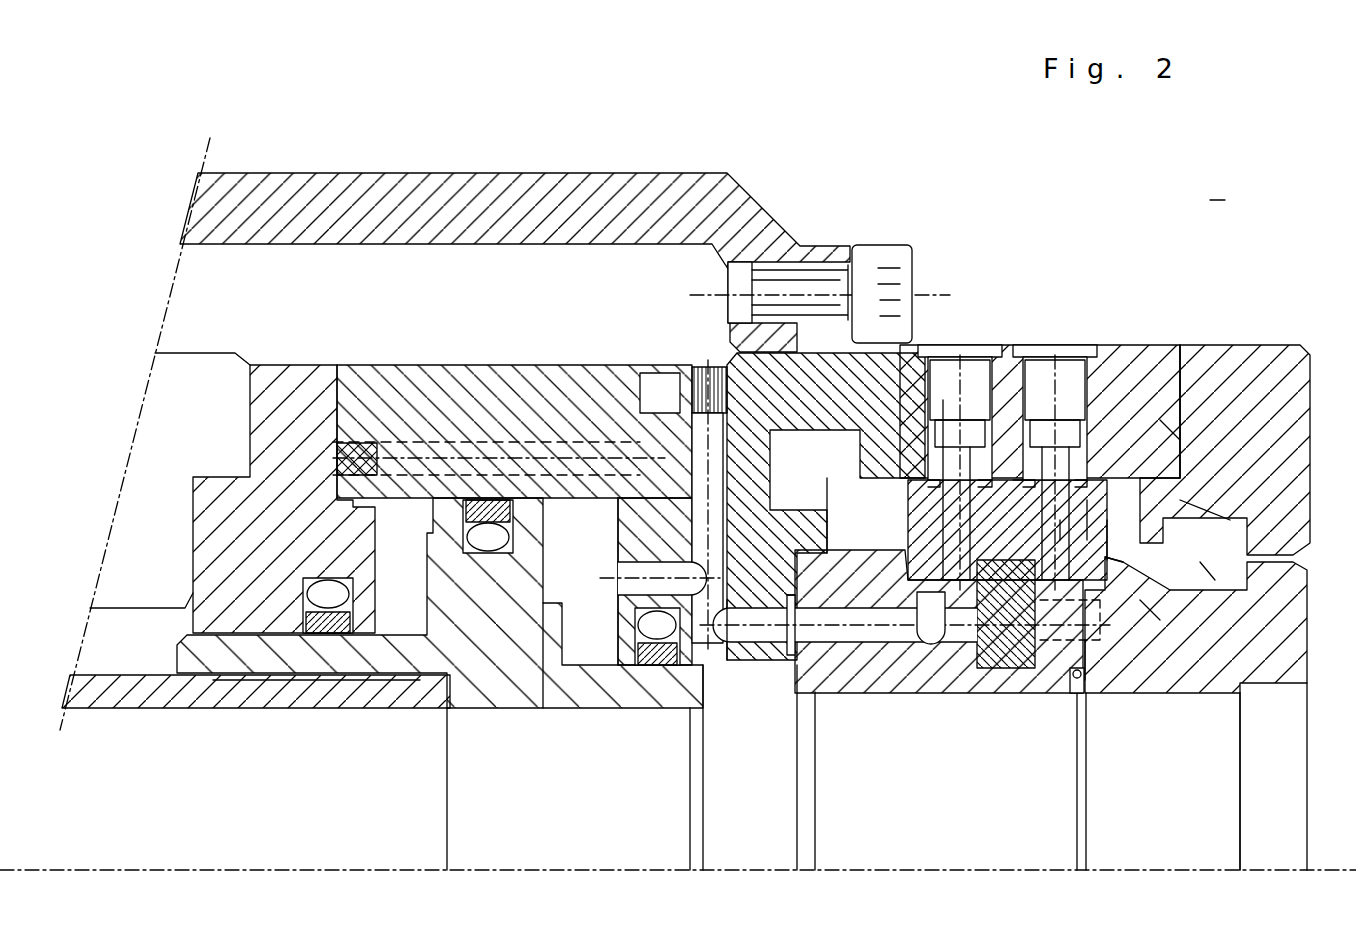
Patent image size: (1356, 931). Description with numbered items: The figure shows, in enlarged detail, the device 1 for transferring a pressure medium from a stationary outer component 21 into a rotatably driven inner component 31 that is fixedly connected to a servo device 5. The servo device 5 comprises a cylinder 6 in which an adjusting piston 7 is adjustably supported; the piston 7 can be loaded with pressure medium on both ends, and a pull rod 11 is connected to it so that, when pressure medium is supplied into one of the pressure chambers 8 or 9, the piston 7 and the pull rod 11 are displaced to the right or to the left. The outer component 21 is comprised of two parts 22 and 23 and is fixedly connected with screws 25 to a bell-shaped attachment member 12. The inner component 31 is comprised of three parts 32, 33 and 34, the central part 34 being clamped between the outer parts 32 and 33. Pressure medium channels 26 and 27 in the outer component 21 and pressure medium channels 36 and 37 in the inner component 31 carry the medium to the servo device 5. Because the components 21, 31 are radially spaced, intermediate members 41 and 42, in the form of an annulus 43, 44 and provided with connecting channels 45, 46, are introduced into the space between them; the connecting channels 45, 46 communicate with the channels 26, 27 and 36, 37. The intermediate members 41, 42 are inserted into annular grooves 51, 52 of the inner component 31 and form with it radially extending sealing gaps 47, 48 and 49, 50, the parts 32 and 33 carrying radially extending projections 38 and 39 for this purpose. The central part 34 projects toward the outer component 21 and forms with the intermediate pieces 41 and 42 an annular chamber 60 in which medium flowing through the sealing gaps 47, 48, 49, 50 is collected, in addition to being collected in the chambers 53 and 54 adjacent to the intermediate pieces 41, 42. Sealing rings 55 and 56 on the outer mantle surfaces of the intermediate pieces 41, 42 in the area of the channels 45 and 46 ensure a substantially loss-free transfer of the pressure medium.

The device 1 is at (1218, 198).
The servo device 5 is at (395, 365).
The cylinder 6 is at (565, 365).
The adjusting piston 7 is at (520, 645).
The pressure chamber 8 is at (580, 610).
The pressure chamber 9 is at (400, 610).
The pull rod 11 is at (110, 658).
The bell-shaped attachment member 12 is at (450, 200).
The stationary outer component 21 is at (1280, 345).
The part of outer component 22 is at (1140, 380).
The part of outer component 23 is at (1230, 350).
The screws 25 is at (865, 265).
The pressure medium channel 26 is at (978, 392).
The pressure medium channel 27 is at (1065, 392).
The rotatably driven inner component 31 is at (1265, 685).
The outer part of inner component 32 is at (915, 693).
The outer part of inner component 33 is at (1180, 650).
The central part of inner component 34 is at (1005, 668).
The pressure medium channel 36 is at (865, 665).
The pressure medium channel 37 is at (1050, 650).
The radially extending projection 38 is at (795, 655).
The radially extending projection 39 is at (1120, 563).
The intermediate member 41 is at (775, 430).
The intermediate member 42 is at (1200, 510).
The annulus 43 is at (905, 580).
The annulus 44 is at (1150, 640).
The connecting channel 45 is at (950, 420).
The connecting channel 46 is at (1090, 530).
The sealing gap 47 is at (892, 543).
The sealing gap 48 is at (1020, 520).
The sealing gap 49 is at (1175, 430).
The sealing gap 50 is at (1060, 520).
The annular groove 51 is at (955, 600).
The annular groove 52 is at (1100, 650).
The chamber 53 is at (745, 660).
The chamber 54 is at (1208, 580).
The sealing ring 55 is at (785, 350).
The sealing ring 56 is at (1115, 530).
The annular chamber 60 is at (960, 645).